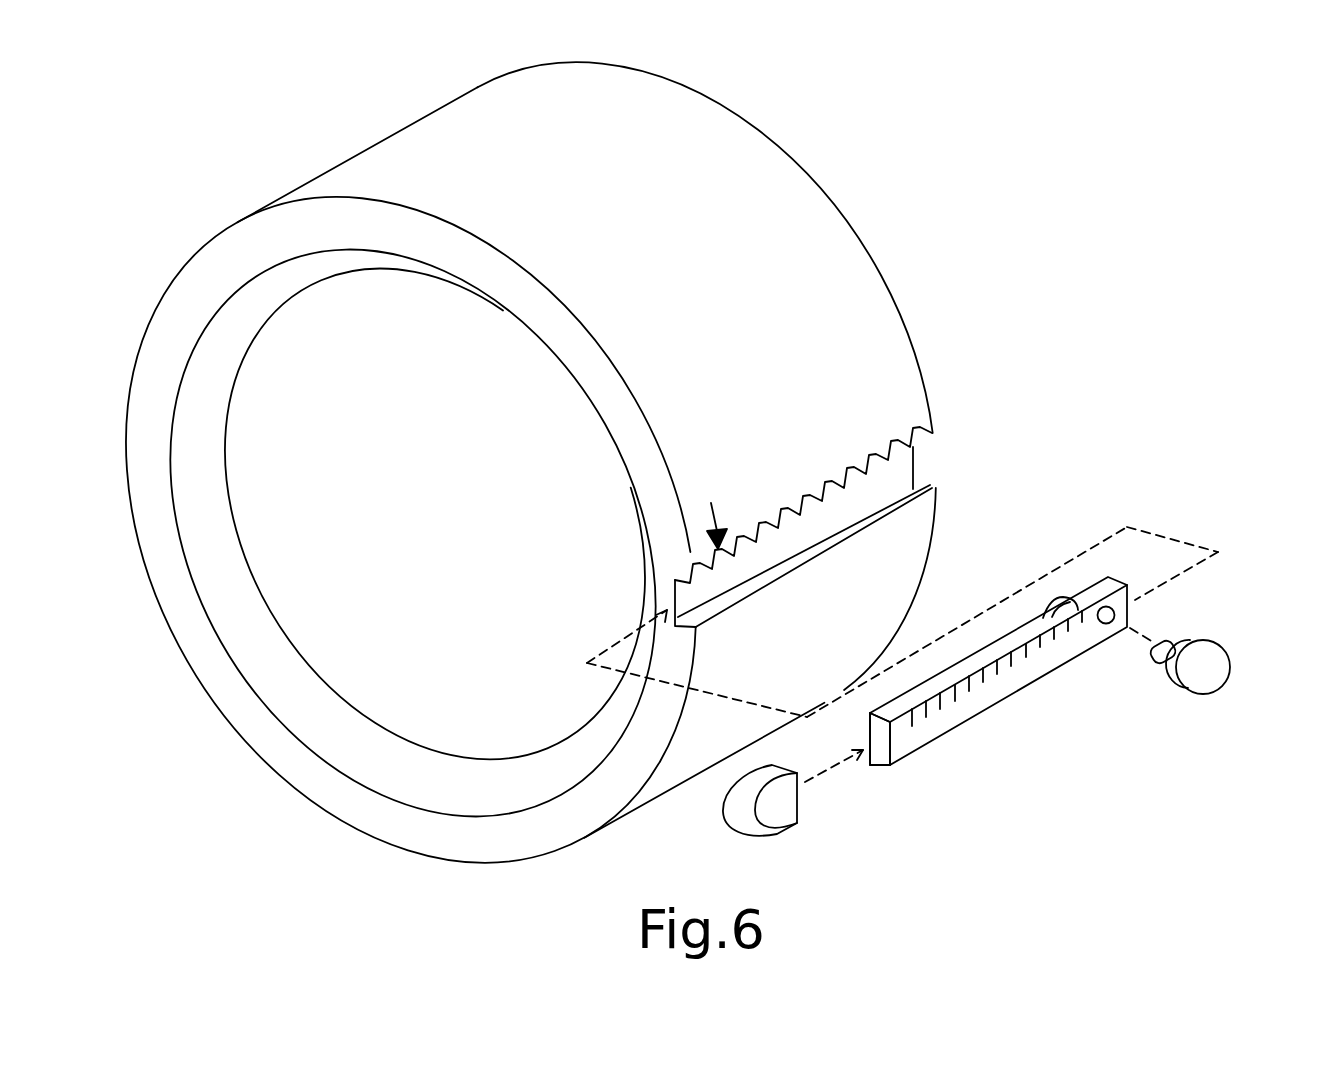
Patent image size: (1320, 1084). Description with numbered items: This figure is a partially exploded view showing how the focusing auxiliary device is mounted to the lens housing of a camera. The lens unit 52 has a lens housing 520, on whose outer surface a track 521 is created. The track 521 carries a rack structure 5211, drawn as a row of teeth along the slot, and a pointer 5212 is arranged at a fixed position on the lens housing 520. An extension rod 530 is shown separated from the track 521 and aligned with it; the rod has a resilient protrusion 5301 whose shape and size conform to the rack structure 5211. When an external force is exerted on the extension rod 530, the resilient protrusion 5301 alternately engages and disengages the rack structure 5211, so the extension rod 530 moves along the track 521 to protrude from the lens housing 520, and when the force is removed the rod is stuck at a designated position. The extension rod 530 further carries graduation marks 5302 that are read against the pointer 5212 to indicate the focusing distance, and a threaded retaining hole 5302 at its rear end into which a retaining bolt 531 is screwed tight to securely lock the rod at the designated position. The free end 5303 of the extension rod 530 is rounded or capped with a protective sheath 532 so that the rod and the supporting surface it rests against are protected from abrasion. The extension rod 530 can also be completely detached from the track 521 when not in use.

The lens unit 52 is at (818, 158).
The lens housing 520 is at (858, 295).
The track 521 is at (872, 497).
The rack structure 5211 is at (887, 450).
The pointer 5212 is at (711, 503).
The extension rod 530 is at (1050, 653).
The resilient protrusion 5301 is at (1108, 563).
The threaded retaining hole 5302 is at (932, 707).
The free end 5303 is at (880, 743).
The retaining bolt 531 is at (1205, 667).
The protective sheath 532 is at (772, 802).